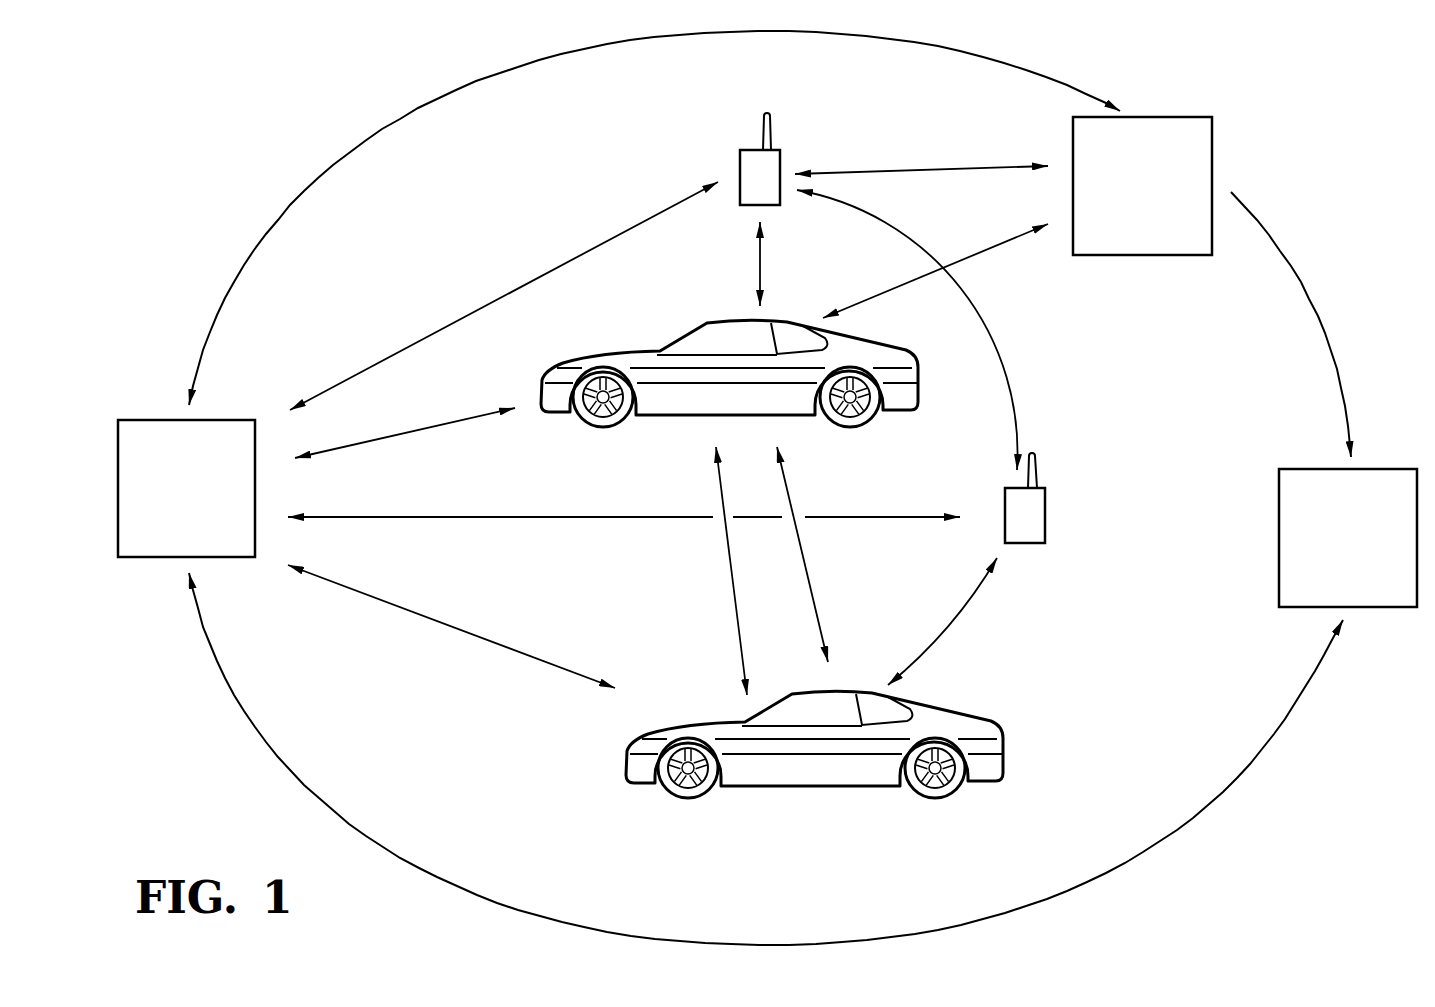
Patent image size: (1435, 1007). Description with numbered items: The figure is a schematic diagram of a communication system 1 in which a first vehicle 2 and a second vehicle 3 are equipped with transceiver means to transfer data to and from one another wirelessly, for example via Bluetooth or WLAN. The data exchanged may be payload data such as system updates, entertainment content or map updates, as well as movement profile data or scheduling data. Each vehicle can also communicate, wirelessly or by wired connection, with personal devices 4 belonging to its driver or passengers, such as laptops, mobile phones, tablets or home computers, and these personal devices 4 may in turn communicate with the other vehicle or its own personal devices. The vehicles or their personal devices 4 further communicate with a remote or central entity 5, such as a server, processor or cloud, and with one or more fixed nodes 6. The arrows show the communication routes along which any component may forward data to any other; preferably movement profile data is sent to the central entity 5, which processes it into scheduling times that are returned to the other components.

The vehicle communication system 1 is at (265, 97).
The first vehicle 2 is at (660, 345).
The second vehicle 3 is at (633, 785).
The personal device 4 is at (750, 150).
The remote or central entity 5 is at (198, 502).
The fixed node 6 is at (1154, 199).